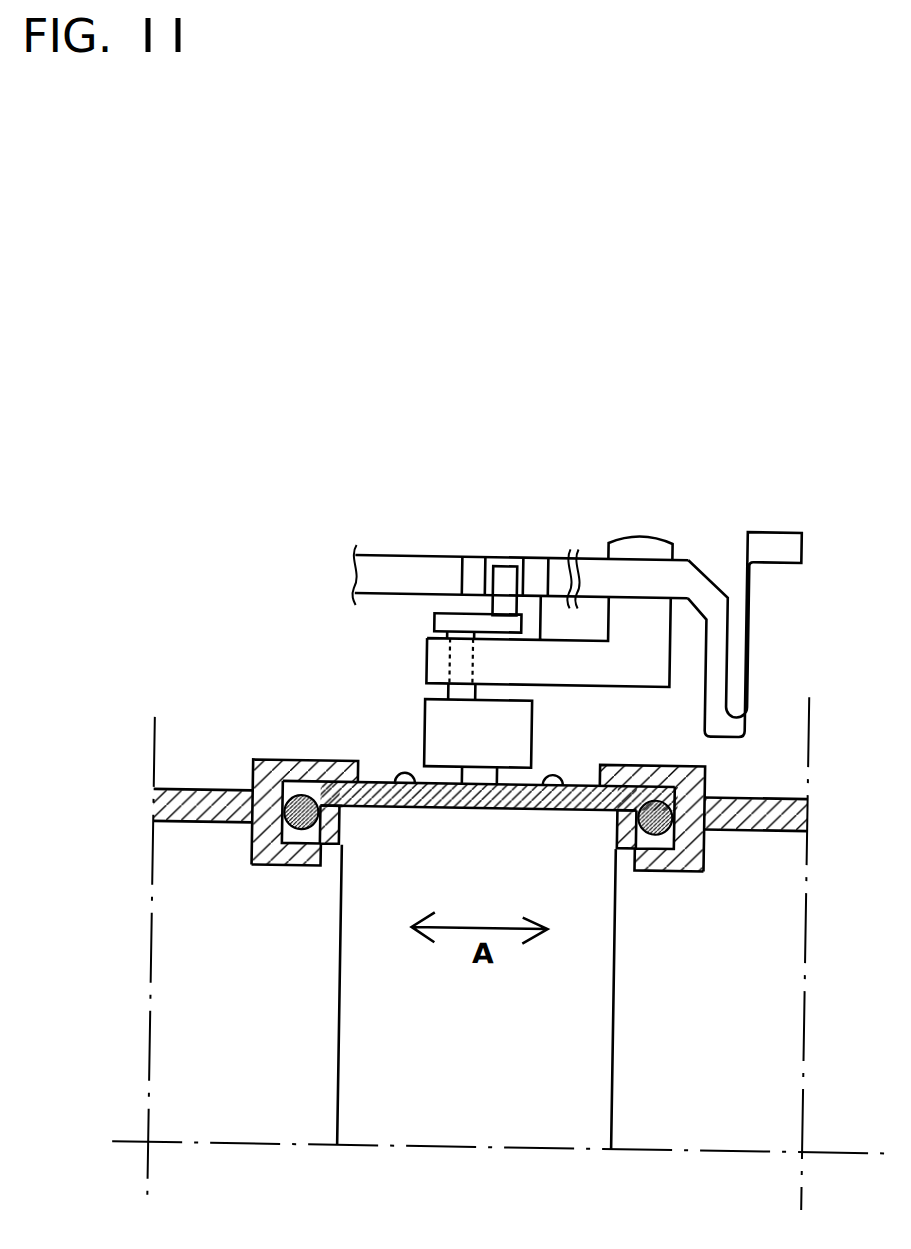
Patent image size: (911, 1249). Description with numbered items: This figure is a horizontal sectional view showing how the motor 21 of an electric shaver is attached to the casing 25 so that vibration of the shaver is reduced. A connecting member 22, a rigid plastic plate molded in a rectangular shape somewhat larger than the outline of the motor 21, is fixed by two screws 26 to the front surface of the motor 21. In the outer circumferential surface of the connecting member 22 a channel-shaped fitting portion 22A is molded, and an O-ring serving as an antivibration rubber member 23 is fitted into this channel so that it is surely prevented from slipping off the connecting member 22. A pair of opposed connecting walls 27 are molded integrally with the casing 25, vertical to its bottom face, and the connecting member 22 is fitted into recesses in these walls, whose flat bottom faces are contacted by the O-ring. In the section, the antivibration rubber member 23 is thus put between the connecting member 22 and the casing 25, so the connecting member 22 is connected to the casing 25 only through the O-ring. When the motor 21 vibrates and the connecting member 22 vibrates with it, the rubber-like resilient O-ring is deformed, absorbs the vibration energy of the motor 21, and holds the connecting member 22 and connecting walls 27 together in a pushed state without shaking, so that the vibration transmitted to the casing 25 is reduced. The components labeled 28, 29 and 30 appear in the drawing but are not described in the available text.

The motor 21 is at (531, 1127).
The connecting member 22 is at (395, 785).
The channel-shaped fitting portion 22A is at (330, 830).
The antivibration rubber member 23 is at (285, 783).
The casing 25 is at (280, 1107).
The screw 26 is at (553, 778).
The connecting wall 27 is at (270, 869).
The pin 28 is at (498, 576).
The bracket 29 is at (553, 662).
The lever arm 30 is at (692, 577).